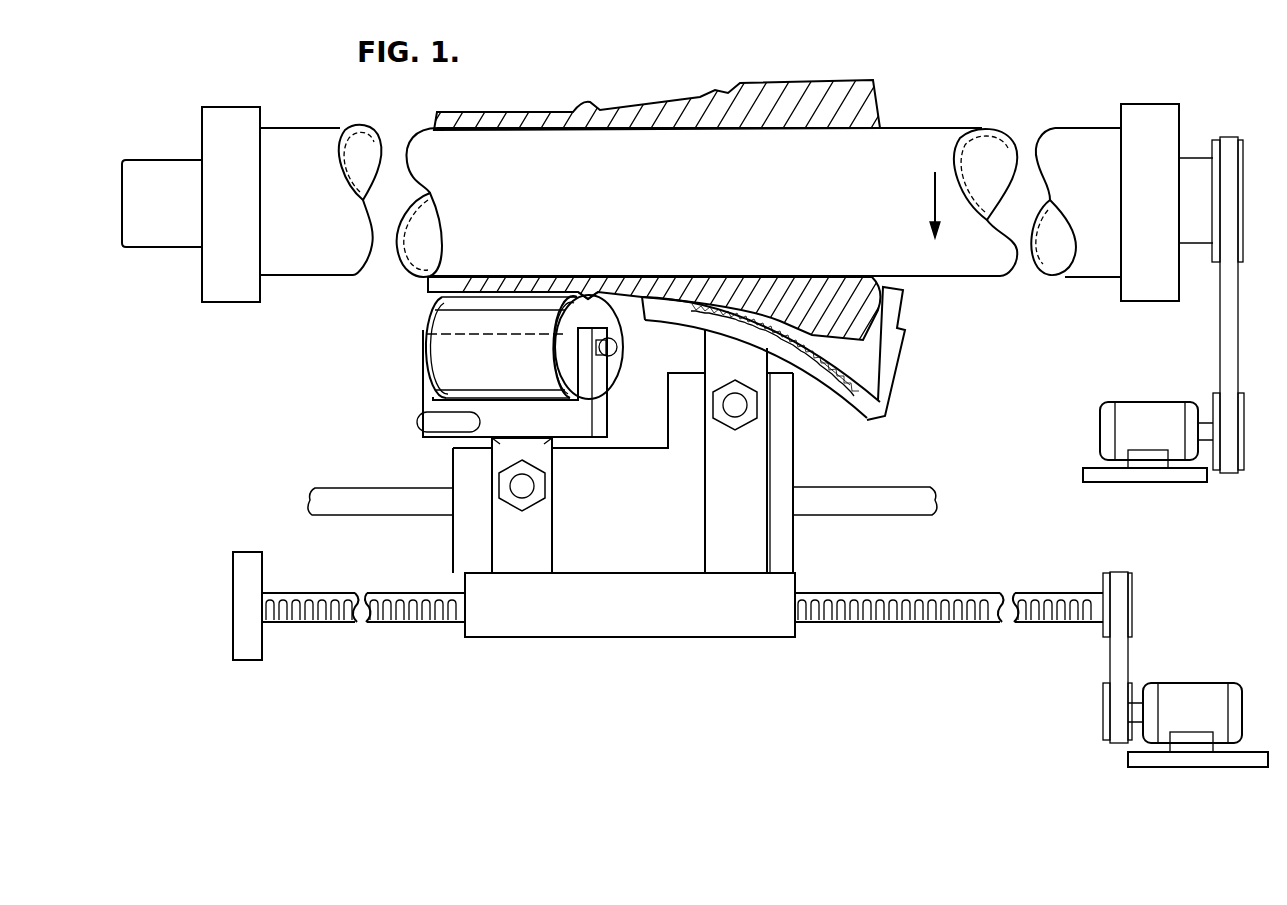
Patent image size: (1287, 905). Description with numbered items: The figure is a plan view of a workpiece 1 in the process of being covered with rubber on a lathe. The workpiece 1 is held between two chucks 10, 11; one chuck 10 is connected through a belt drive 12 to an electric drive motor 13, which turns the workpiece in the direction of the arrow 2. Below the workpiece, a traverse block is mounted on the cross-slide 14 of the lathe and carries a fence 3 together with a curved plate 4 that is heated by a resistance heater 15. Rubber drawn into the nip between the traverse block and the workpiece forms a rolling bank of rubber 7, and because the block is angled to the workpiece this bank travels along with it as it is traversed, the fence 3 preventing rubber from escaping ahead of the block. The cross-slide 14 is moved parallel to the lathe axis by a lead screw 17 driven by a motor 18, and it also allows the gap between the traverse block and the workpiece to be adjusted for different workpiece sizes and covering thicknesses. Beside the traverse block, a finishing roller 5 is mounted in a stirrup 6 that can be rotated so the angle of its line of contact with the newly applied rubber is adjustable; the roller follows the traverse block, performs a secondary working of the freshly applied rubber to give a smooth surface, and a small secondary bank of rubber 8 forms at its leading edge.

The workpiece 1 is at (946, 262).
The arrow 2 is at (935, 188).
The fence 3 is at (882, 356).
The curved plate 4 is at (837, 356).
The finishing roller 5 is at (617, 360).
The stirrup 6 is at (600, 420).
The rolling bank of rubber 7 is at (816, 290).
The secondary bank of rubber 8 is at (587, 292).
The chuck 10 is at (1132, 116).
The chuck 11 is at (219, 120).
The belt drive 12 is at (1228, 322).
The electric drive motor 13 is at (1108, 425).
The cross-slide 14 is at (460, 466).
The resistance heater 15 is at (840, 378).
The lead screw 17 is at (950, 612).
The motor 18 is at (1178, 694).